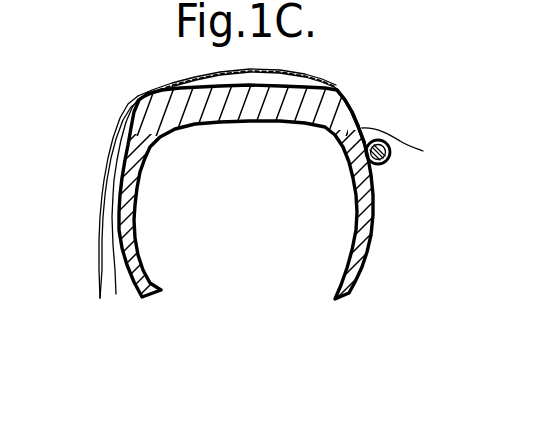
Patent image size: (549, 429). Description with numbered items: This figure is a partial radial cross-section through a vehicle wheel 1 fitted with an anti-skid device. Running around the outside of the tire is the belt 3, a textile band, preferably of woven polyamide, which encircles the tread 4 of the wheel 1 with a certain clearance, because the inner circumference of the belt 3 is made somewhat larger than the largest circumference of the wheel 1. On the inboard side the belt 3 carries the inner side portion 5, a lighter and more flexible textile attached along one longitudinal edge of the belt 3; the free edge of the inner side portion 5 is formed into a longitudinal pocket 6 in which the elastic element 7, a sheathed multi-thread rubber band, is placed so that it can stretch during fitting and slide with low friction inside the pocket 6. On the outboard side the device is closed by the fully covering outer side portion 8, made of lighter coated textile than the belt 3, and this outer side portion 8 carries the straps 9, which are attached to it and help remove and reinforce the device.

The vehicle wheel 1 is at (353, 267).
The belt 3 is at (312, 75).
The tread 4 is at (177, 96).
The inner side portion 5 is at (349, 104).
The longitudinal pocket 6 is at (402, 147).
The elastic element 7 is at (382, 163).
The outer side portion 8 is at (116, 217).
The straps 9 is at (106, 152).